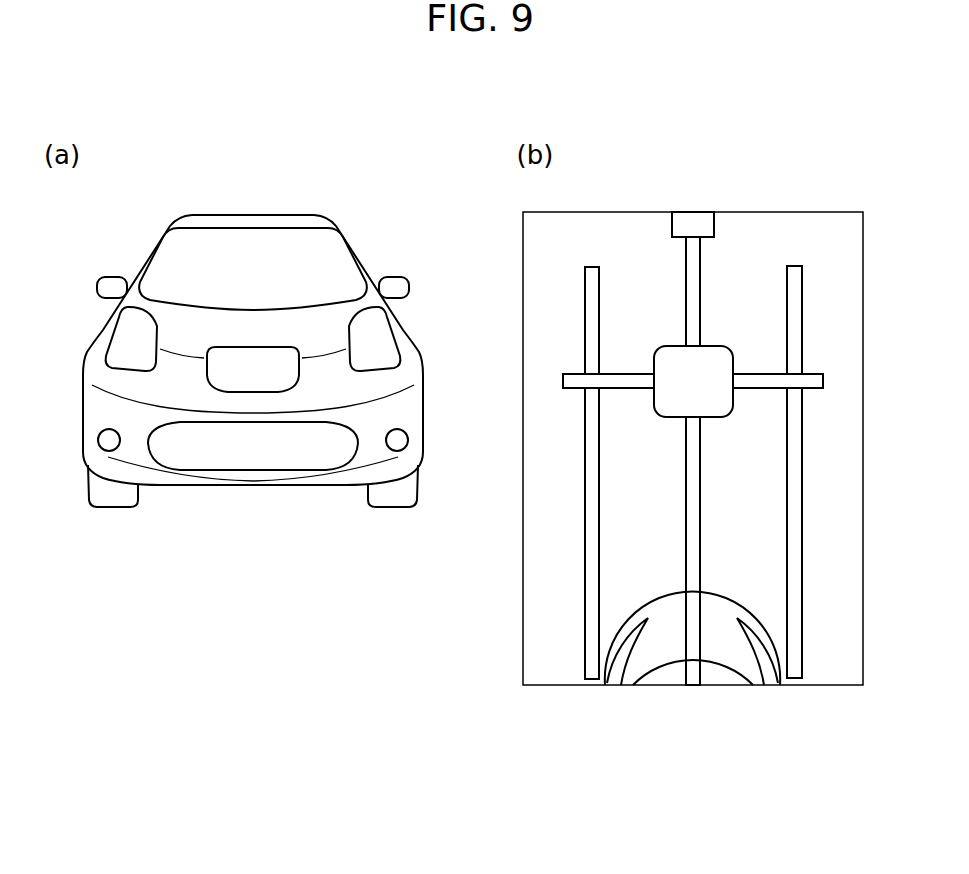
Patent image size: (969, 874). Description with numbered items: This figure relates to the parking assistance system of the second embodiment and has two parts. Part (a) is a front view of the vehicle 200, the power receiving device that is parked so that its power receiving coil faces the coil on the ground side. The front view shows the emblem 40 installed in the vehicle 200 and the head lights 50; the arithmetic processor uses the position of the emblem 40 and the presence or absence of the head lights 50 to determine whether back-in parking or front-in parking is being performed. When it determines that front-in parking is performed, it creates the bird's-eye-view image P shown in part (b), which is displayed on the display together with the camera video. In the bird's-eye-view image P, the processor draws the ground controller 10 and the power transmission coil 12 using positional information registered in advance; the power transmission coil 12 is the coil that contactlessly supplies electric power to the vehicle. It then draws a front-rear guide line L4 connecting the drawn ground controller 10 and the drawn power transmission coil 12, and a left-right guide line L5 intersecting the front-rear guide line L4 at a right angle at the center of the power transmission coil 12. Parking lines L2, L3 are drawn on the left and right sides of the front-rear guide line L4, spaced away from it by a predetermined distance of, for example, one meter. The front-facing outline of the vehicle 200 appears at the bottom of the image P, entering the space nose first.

The vehicle 200 is at (253, 213).
The head lights 50 is at (113, 322).
The emblem 40 is at (262, 388).
The bird's-eye-view image P is at (847, 276).
The ground controller 10 is at (692, 220).
The power transmission coil 12 is at (722, 345).
The parking line L2 is at (599, 452).
The parking line L3 is at (787, 456).
The front-rear guide line L4 is at (692, 523).
The left-right guide line L5 is at (758, 378).